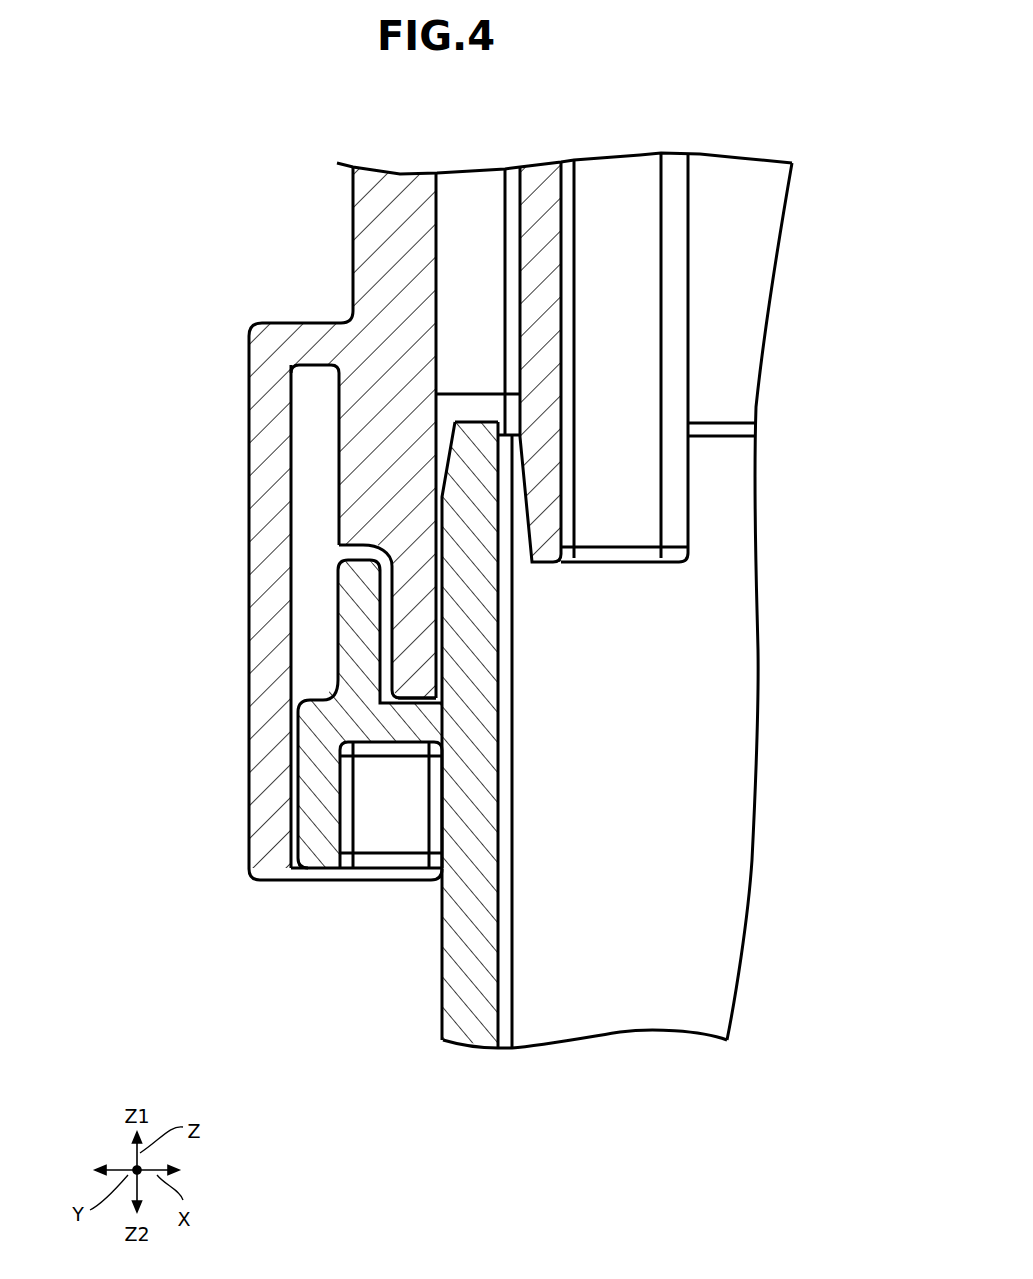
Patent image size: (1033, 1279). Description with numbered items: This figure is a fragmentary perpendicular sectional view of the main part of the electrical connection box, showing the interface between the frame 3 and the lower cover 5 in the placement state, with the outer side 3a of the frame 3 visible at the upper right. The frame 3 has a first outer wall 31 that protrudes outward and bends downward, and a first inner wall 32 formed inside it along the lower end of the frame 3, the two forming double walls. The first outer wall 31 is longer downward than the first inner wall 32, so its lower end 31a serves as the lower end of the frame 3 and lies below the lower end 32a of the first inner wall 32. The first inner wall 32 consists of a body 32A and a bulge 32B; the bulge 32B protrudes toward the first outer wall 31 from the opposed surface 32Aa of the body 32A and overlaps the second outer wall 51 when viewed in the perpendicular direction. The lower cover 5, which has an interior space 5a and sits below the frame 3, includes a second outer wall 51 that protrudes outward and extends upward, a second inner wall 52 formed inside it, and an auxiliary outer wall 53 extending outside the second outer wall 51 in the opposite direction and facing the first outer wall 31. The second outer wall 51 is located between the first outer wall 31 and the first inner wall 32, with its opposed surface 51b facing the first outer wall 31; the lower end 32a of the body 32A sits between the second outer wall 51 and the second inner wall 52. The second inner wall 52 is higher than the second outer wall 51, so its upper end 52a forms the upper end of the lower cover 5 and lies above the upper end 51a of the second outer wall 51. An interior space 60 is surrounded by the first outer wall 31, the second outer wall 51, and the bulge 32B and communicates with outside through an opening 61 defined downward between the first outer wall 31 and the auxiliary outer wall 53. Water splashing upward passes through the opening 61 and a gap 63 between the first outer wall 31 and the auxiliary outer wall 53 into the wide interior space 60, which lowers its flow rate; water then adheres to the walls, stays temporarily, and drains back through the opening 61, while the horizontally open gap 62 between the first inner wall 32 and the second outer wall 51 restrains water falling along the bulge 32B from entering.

The frame 3 is at (226, 261).
The bracket outer surface 3a is at (733, 207).
The lower cover 5 is at (288, 1027).
The interior space 5a is at (613, 950).
The first outer wall 31 is at (243, 470).
The lower end 31a is at (270, 884).
The first inner wall 32 is at (308, 497).
The body 32A is at (417, 602).
The opposed surface 32Aa is at (387, 657).
The bulge 32B is at (360, 518).
The lower end 32a is at (410, 706).
The second outer wall 51 is at (329, 615).
The upper end 51a is at (365, 553).
The opposed surface 51b is at (336, 638).
The second inner wall 52 is at (428, 667).
The upper end 52a is at (480, 418).
The auxiliary outer wall 53 is at (284, 800).
The interior space 60 is at (310, 405).
The opening 61 is at (300, 882).
The gap 62 is at (354, 553).
The gap 63 is at (294, 830).